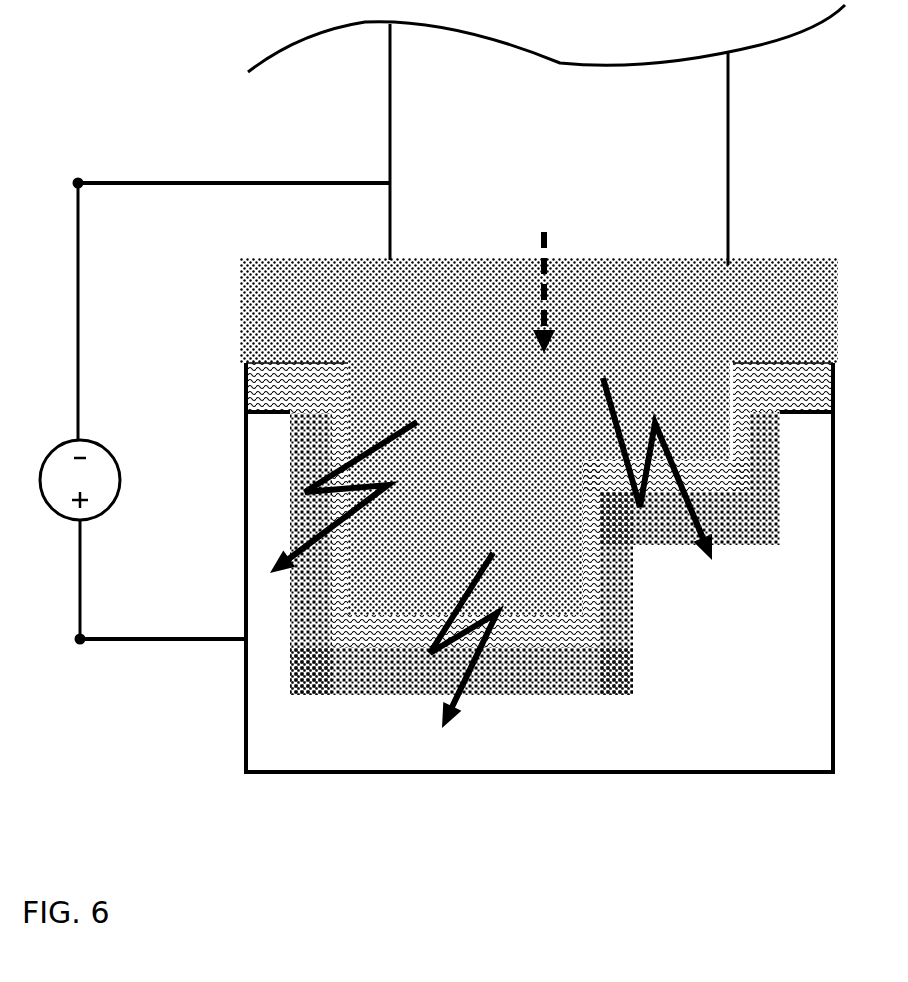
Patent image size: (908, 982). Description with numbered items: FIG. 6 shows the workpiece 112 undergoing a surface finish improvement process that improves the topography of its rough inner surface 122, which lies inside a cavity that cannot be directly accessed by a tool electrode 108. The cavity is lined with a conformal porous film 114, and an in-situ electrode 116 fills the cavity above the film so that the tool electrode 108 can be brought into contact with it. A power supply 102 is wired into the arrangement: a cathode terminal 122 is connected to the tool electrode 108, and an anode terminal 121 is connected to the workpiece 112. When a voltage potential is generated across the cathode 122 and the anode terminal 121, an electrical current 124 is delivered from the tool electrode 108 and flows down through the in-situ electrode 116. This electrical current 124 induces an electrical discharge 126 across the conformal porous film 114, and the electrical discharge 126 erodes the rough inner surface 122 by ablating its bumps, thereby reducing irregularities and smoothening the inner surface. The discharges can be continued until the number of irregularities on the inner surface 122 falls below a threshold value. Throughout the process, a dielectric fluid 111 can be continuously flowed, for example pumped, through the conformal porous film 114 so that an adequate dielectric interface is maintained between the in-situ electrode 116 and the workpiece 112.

The power supply 102 is at (48, 452).
The tool electrode 108 is at (720, 136).
The dielectric fluid 111 is at (800, 388).
The workpiece 112 is at (247, 690).
The conformal porous film 114 is at (800, 365).
The in-situ electrode 116 is at (780, 278).
The anode terminal 121 is at (185, 636).
The cathode terminal 122 is at (158, 182).
The electrical current 124 is at (540, 252).
The electrical discharge 126 is at (405, 420).